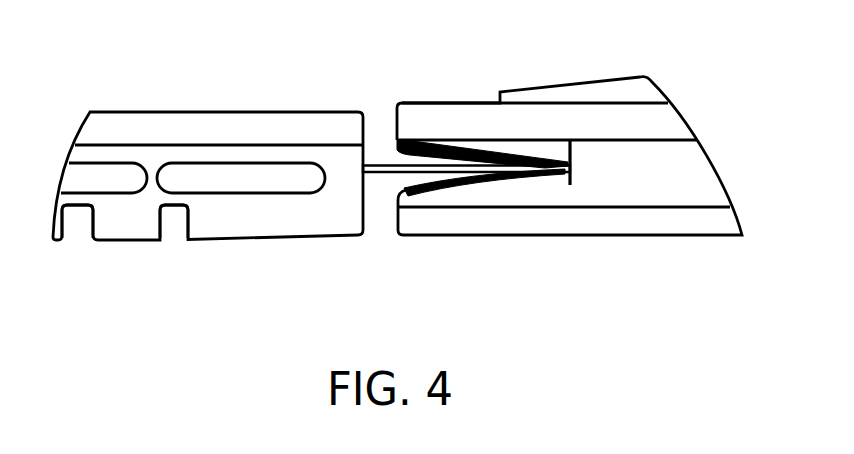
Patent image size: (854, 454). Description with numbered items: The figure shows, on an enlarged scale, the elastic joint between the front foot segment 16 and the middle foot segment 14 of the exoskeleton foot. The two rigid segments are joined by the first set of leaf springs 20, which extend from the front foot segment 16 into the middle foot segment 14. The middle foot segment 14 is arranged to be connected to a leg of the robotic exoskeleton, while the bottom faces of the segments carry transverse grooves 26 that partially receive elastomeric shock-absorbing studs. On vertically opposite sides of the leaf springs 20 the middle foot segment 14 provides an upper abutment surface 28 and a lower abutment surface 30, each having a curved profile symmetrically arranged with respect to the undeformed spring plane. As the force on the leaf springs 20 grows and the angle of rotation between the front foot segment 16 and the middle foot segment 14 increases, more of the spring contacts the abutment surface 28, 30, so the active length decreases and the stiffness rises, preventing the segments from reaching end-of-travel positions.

The middle foot segment 14 is at (630, 236).
The front foot segment 16 is at (307, 240).
The first set of leaf springs 20 is at (368, 176).
The transverse grooves 26 is at (170, 232).
The upper abutment surface 28 is at (405, 157).
The lower abutment surface 30 is at (410, 184).